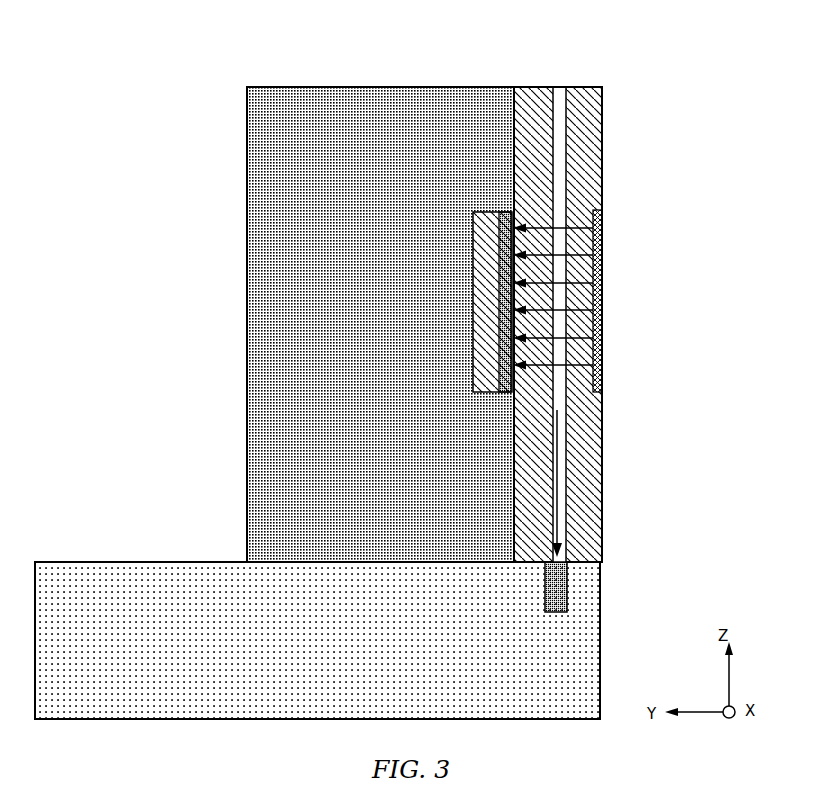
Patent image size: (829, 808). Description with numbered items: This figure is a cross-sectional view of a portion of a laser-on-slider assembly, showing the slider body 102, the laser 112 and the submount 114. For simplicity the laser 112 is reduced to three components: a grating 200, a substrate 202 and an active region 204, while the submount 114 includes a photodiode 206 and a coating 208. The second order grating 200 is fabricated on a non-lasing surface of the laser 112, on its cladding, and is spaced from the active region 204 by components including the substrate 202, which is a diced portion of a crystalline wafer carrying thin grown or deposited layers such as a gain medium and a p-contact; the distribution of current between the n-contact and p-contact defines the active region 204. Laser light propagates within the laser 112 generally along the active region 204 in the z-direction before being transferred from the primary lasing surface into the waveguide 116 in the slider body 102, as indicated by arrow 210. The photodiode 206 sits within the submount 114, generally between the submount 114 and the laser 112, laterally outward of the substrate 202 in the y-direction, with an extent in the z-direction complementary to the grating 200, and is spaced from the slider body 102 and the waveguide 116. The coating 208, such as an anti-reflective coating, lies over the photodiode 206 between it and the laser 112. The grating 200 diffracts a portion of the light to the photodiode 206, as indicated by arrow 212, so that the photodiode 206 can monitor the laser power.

The slider body 102 is at (130, 562).
The laser 112 is at (431, 328).
The submount 114 is at (246, 378).
The waveguide 116 is at (558, 580).
The grating 200 is at (601, 300).
The substrate 202 is at (603, 118).
The active region 204 is at (563, 87).
The photodiode 206 is at (485, 245).
The coating 208 is at (507, 347).
The arrow 210 is at (558, 483).
The arrow 212 is at (545, 226).